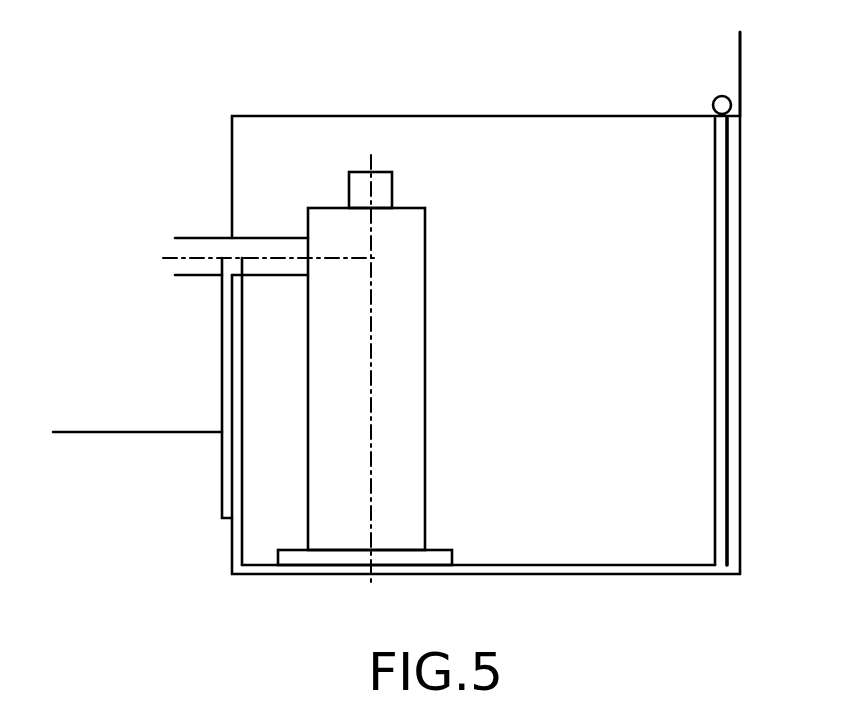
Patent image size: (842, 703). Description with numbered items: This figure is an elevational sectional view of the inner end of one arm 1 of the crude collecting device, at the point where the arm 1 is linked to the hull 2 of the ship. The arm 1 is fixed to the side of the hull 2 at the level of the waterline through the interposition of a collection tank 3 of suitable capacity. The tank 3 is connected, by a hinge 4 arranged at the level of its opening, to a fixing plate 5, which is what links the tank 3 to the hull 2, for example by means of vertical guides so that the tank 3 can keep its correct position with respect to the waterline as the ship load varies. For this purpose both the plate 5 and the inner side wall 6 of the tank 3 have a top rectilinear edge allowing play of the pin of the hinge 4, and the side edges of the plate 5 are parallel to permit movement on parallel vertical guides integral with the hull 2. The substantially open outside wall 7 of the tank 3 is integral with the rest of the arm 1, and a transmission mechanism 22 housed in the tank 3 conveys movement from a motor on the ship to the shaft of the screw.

The arm 1 is at (128, 433).
The hull 2 is at (740, 53).
The collection tank 3 is at (610, 508).
The hinge 4 is at (718, 101).
The fixing plate 5 is at (735, 430).
The inner side wall 6 is at (722, 362).
The outside wall 7 is at (232, 527).
The transmission mechanism 22 is at (350, 497).